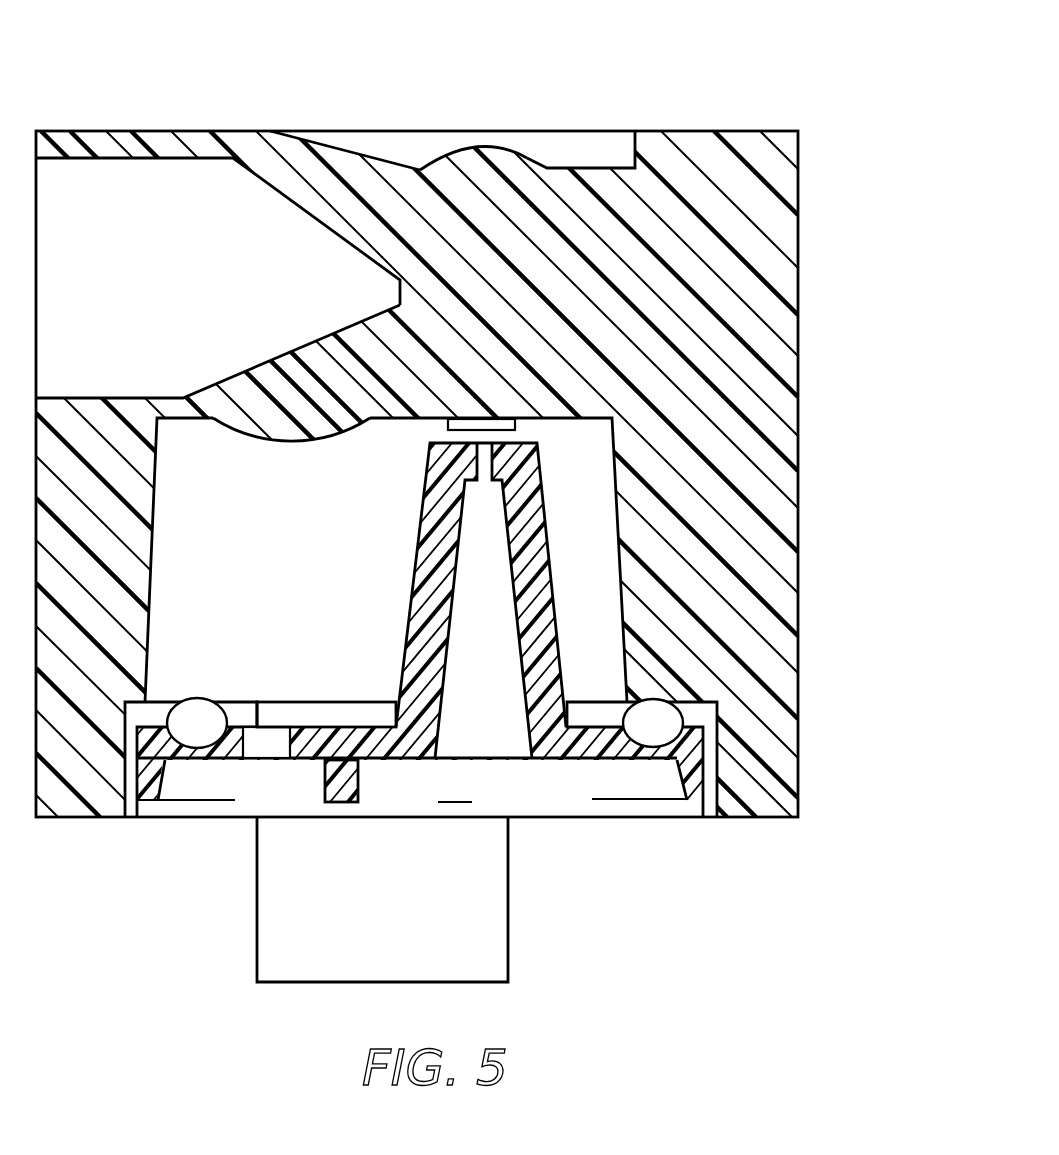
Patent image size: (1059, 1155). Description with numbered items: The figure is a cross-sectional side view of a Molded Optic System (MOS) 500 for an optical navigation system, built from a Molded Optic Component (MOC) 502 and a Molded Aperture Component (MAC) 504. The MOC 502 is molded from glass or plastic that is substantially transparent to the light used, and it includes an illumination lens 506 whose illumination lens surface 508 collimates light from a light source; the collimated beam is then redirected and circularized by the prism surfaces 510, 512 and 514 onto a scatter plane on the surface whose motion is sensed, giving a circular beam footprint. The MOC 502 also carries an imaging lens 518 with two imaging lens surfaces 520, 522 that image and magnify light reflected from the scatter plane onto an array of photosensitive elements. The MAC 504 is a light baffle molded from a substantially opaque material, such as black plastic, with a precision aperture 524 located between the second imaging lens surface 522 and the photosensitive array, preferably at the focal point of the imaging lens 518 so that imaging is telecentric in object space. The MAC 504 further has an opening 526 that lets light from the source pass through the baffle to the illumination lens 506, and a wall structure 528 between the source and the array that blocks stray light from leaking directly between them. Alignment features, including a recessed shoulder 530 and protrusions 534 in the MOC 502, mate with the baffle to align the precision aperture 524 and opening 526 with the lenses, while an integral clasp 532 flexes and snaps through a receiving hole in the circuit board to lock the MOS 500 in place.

The Molded Optic System (MOS) 500 is at (749, 62).
The Molded Optic Component (MOC) 502 is at (801, 355).
The Molded Aperture Component (MAC) 504 is at (406, 656).
The illumination lens 506 is at (297, 472).
The illumination lens surface 508 is at (262, 445).
The prism surface 510 is at (267, 359).
The prism surface 512 is at (316, 222).
The prism surface 514 is at (370, 148).
The imaging lens 518 is at (486, 128).
The imaging lens surface 520 is at (539, 159).
The imaging lens surface 522 is at (518, 425).
The precision aperture 524 is at (485, 484).
The opening 526 is at (268, 760).
The wall structure 528 is at (358, 798).
The recessed shoulder 530 is at (150, 705).
The integral clasp 532 is at (510, 940).
The protrusion 534 is at (226, 718).